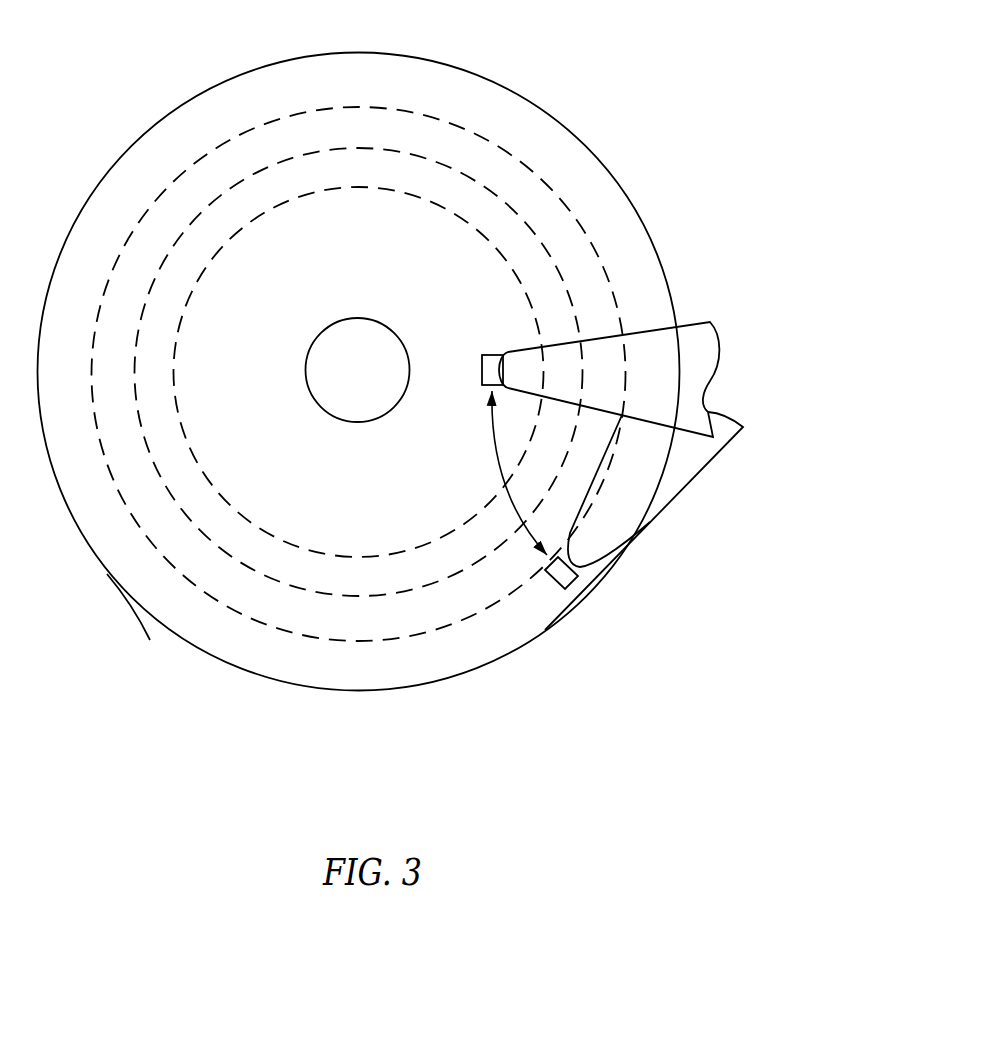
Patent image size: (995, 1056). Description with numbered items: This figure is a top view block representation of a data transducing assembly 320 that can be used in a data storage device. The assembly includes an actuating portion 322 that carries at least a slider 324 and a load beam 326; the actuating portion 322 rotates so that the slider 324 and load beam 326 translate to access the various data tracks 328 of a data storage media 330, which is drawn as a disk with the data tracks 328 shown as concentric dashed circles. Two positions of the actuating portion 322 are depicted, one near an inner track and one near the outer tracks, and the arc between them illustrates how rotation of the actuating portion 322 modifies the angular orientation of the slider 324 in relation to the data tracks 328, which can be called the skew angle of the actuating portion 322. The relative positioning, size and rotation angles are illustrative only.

The data transducing assembly 320 is at (629, 95).
The actuating portion 322 is at (702, 477).
The slider 324 is at (578, 577).
The load beam 326 is at (549, 455).
The data tracks 328 is at (190, 227).
The data storage media 330 is at (107, 574).